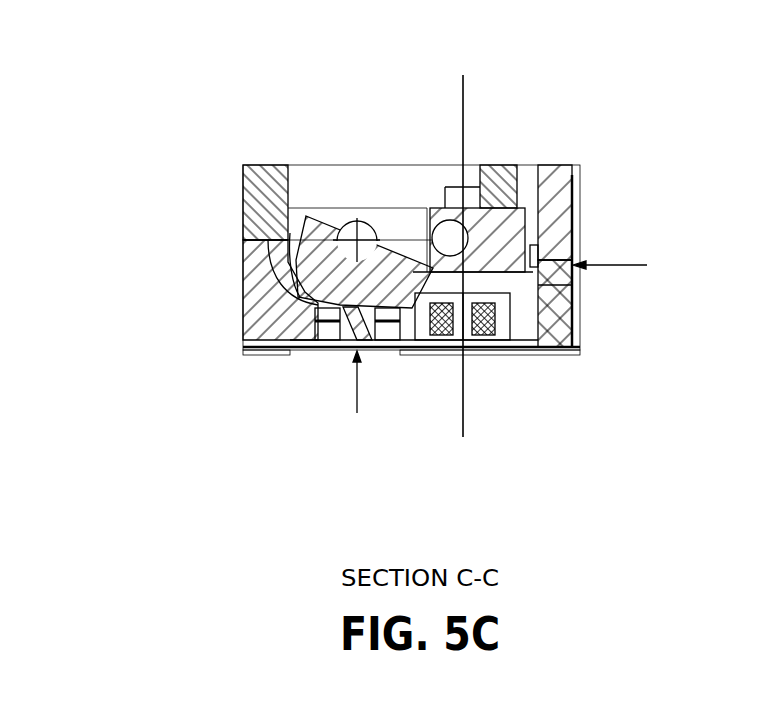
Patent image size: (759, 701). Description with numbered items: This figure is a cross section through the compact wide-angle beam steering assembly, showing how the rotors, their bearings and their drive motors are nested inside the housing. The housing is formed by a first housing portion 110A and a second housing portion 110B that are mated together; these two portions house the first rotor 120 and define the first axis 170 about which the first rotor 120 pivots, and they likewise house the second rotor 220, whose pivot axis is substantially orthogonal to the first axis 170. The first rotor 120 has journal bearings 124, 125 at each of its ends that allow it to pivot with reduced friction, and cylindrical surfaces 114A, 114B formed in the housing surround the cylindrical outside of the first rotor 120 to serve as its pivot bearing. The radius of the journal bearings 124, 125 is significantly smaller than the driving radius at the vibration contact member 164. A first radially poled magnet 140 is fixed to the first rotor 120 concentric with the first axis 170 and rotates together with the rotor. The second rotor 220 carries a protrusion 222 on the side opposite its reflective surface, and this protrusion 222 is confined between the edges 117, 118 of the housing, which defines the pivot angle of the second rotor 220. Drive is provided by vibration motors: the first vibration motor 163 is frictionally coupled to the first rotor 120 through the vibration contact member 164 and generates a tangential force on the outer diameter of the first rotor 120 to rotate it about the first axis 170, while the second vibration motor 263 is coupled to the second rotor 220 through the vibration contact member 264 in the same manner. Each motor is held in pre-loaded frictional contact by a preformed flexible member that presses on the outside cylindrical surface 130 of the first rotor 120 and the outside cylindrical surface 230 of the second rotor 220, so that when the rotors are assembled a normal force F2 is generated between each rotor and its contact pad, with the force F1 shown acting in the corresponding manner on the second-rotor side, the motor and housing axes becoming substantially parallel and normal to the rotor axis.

The first housing portion 110A is at (243, 322).
The second housing portion 110B is at (307, 220).
The cylindrical surface 114A is at (558, 330).
The cylindrical surface 114B is at (500, 165).
The edge 117 is at (300, 252).
The edge 118 is at (300, 315).
The first rotor 120 is at (542, 216).
The journal bearing 124 is at (452, 192).
The journal bearing 125 is at (535, 320).
The outside cylindrical surface 130 is at (540, 262).
The first radially poled magnet 140 is at (497, 322).
The first vibration motor 163 is at (548, 277).
The vibration contact member 164 is at (550, 268).
The first axis 170 is at (463, 412).
The second rotor 220 is at (300, 213).
The protrusion 222 is at (300, 295).
The outside cylindrical surface 230 is at (385, 325).
The second vibration motor 263 is at (347, 328).
The vibration contact member 264 is at (352, 313).
The force F1 is at (356, 401).
The normal force F2 is at (623, 266).